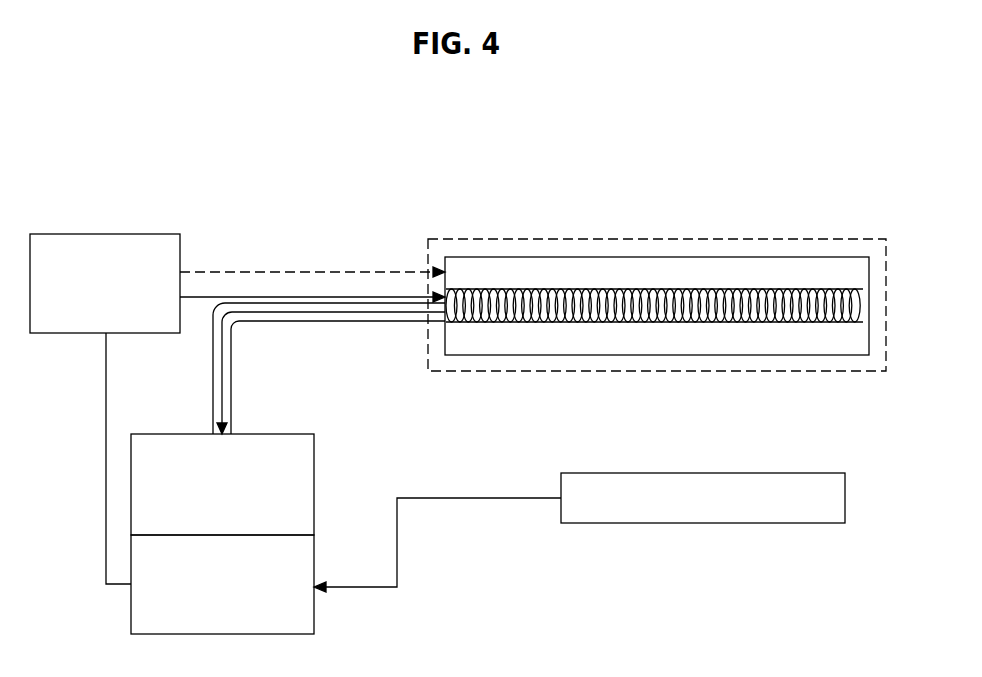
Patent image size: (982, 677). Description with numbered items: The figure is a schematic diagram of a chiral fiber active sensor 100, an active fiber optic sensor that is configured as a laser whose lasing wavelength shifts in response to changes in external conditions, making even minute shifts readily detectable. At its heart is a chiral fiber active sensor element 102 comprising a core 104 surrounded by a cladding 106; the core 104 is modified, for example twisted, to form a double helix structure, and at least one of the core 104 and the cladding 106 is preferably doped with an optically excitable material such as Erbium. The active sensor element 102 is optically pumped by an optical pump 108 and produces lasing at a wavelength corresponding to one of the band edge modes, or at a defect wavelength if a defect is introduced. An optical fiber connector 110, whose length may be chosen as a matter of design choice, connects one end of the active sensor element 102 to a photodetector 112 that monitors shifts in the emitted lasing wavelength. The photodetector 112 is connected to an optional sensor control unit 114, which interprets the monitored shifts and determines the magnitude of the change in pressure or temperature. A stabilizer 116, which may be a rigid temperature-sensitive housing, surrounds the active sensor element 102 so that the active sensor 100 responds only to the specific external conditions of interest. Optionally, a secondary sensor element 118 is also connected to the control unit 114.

The chiral fiber active sensor 100 is at (345, 173).
The chiral fiber active sensor element 102 is at (730, 257).
The core 104 is at (657, 302).
The cladding 106 is at (712, 300).
The optical pump 108 is at (103, 234).
The optical fiber connector 110 is at (387, 322).
The photodetector 112 is at (315, 485).
The sensor control unit 114 is at (315, 603).
The stabilizer 116 is at (677, 372).
The secondary sensor element 118 is at (702, 523).